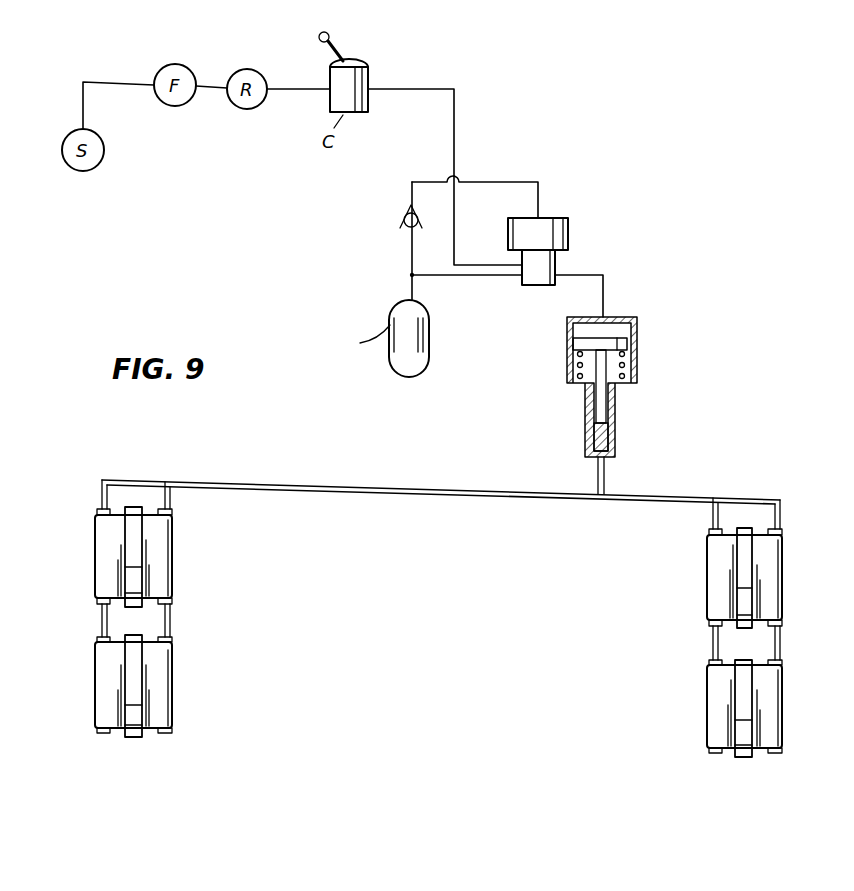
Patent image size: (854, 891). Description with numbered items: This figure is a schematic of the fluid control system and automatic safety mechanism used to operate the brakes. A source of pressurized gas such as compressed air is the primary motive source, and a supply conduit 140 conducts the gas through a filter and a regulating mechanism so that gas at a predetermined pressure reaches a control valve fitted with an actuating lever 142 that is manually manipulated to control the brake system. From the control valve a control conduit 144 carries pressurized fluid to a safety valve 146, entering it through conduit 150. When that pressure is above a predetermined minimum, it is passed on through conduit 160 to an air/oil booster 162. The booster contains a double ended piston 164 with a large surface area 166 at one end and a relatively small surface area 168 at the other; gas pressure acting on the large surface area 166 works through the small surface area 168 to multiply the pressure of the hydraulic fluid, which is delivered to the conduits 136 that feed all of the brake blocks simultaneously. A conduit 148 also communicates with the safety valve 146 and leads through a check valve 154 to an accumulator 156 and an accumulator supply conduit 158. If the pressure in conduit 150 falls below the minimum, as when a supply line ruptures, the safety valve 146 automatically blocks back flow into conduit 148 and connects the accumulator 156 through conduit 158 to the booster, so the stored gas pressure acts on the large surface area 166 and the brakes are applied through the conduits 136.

The conduits 136 is at (638, 494).
The supply conduit 140 is at (103, 80).
The actuating lever 142 is at (341, 52).
The control conduit 144 is at (437, 92).
The safety valve 146 is at (567, 238).
The conduit 148 is at (492, 182).
The conduit 150 is at (454, 213).
The check valve 154 is at (400, 219).
The accumulator 156 is at (398, 367).
The accumulator supply conduit 158 is at (457, 277).
The conduit 160 is at (606, 300).
The air/oil booster 162 is at (638, 371).
The double ended piston 164 is at (597, 387).
The large surface area 166 is at (620, 340).
The small surface area 168 is at (597, 430).